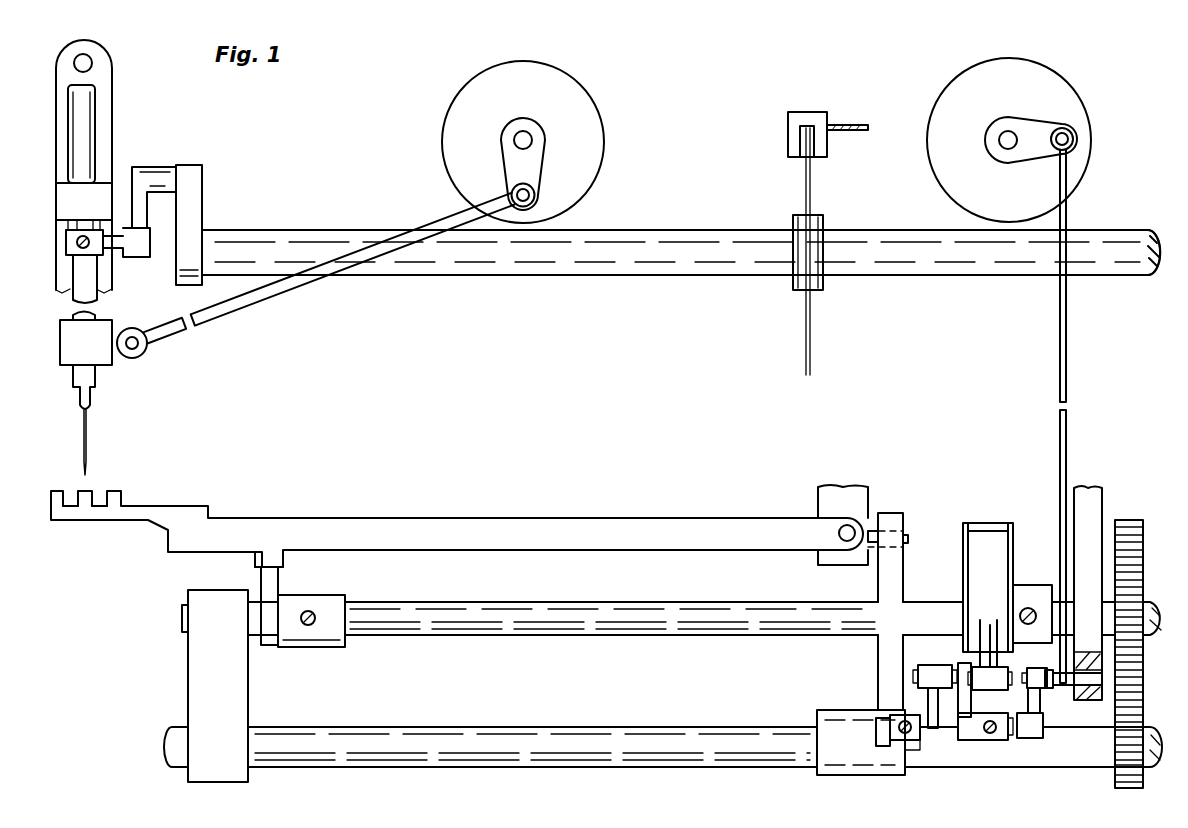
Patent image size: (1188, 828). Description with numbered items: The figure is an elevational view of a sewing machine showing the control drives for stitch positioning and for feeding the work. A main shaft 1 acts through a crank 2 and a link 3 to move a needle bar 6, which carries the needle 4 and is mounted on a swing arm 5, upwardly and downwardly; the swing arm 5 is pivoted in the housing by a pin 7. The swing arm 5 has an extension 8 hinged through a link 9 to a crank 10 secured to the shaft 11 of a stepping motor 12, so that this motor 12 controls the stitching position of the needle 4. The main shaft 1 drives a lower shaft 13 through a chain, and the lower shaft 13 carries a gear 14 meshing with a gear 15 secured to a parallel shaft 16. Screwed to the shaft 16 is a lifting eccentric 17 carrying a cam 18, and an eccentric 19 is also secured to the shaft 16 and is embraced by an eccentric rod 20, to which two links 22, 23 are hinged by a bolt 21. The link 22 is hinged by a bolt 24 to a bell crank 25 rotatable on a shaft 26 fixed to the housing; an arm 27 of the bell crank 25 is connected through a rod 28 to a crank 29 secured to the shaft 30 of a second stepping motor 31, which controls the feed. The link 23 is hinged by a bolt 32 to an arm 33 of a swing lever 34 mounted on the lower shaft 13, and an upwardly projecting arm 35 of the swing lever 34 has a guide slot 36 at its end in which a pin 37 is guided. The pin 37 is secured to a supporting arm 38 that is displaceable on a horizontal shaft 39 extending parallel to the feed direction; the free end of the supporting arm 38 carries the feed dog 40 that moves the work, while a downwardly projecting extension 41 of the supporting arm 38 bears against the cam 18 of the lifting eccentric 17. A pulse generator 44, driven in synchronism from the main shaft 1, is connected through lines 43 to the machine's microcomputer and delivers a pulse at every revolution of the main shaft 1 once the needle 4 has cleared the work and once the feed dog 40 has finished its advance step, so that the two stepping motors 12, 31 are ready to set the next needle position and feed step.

The main shaft 1 is at (493, 258).
The crank 2 is at (197, 210).
The link 3 is at (142, 224).
The needle 4 is at (88, 448).
The swing arm 5 is at (105, 128).
The needle bar 6 is at (87, 162).
The pin 7 is at (92, 65).
The extension 8 is at (122, 357).
The link 9 is at (273, 280).
The crank 10 is at (538, 165).
The shaft 11 is at (532, 137).
The stepping motor 12 is at (578, 93).
The lower shaft 13 is at (660, 745).
The gear 14 is at (1140, 768).
The gear 15 is at (1138, 575).
The shaft 16 is at (738, 615).
The lifting eccentric 17 is at (330, 610).
The cam 18 is at (273, 587).
The eccentric 19 is at (990, 535).
The eccentric rod 20 is at (993, 667).
The bolt 21 is at (957, 662).
The link 22 is at (968, 708).
The link 23 is at (927, 700).
The bolt 24 is at (1015, 740).
The bell crank 25 is at (1045, 714).
The shaft 26 is at (1087, 692).
The arm 27 is at (1053, 688).
The rod 28 is at (1063, 428).
The crank 29 is at (1037, 123).
The shaft 30 is at (1005, 145).
The stepping motor 31 is at (948, 97).
The bolt 32 is at (882, 727).
The arm 33 is at (905, 745).
The swing lever 34 is at (830, 777).
The arm 35 is at (893, 592).
The guide slot 36 is at (890, 563).
The pin 37 is at (907, 538).
The supporting arm 38 is at (650, 520).
The horizontal shaft 39 is at (847, 541).
The feed dog 40 is at (105, 512).
The extension 41 is at (258, 558).
The lines 43 is at (855, 131).
The pulse generator 44 is at (815, 118).